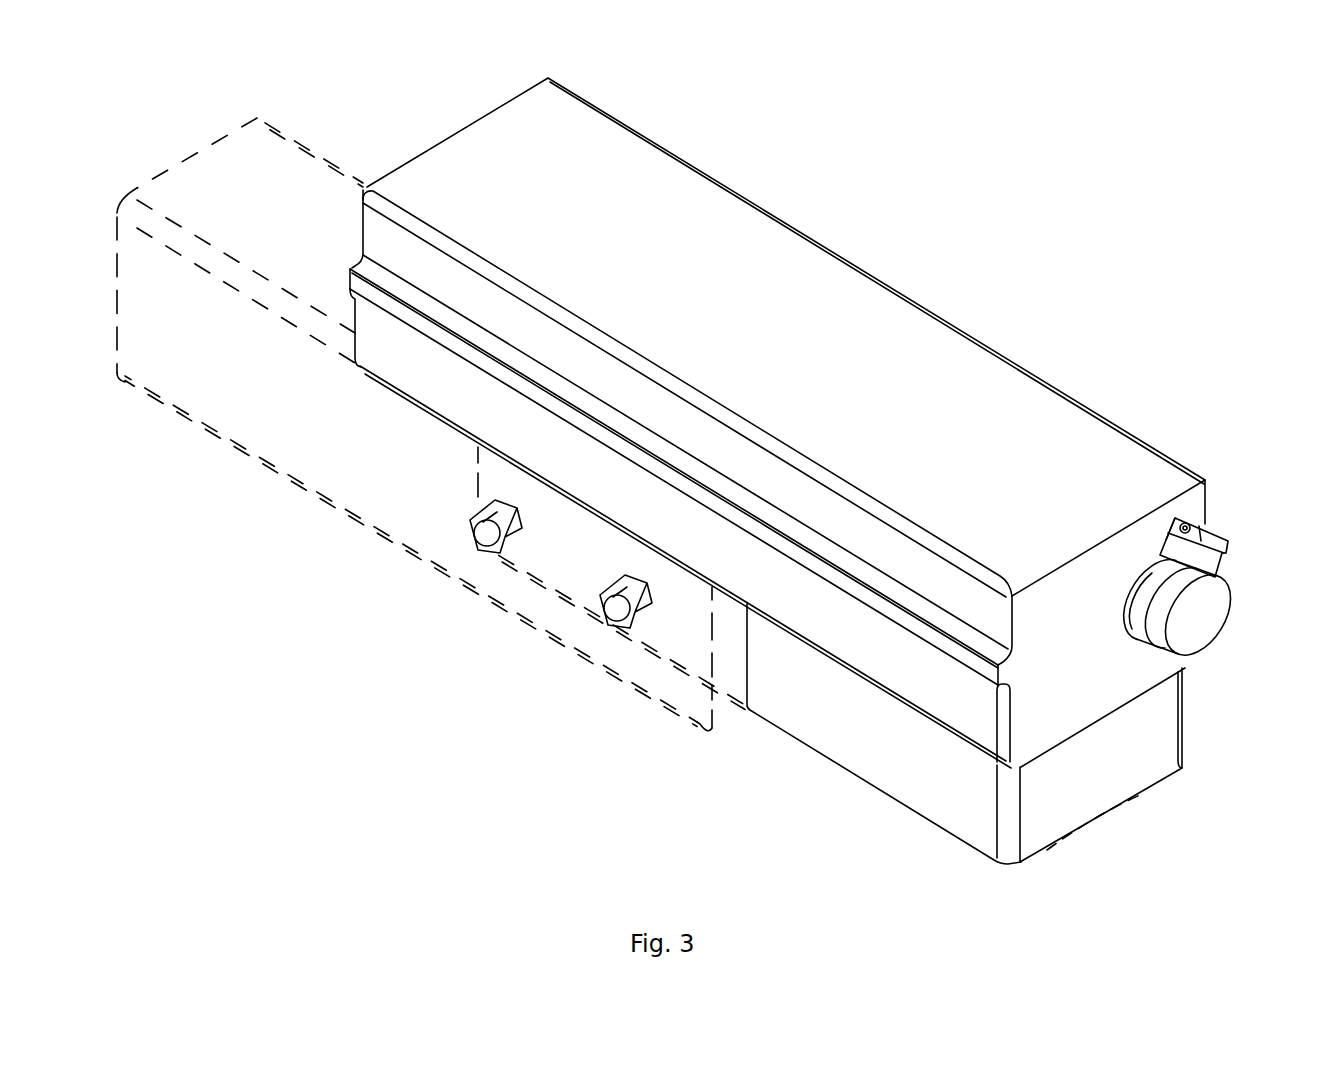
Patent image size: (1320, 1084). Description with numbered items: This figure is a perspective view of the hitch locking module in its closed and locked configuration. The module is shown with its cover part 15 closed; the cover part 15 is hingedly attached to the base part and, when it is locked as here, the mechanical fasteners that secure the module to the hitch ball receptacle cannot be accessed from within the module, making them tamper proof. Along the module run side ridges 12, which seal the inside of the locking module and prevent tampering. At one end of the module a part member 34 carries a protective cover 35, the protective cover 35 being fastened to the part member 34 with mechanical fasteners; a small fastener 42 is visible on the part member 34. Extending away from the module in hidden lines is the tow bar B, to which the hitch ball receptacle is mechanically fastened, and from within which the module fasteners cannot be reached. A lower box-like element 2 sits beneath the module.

The lower housing / base box 2 is at (1083, 778).
The side ridges 12 is at (855, 572).
The cover part 15 is at (737, 303).
The part member 34 is at (1170, 528).
The protective cover 35 is at (1193, 627).
The screw 42 is at (1190, 524).
The tow bar B is at (333, 551).